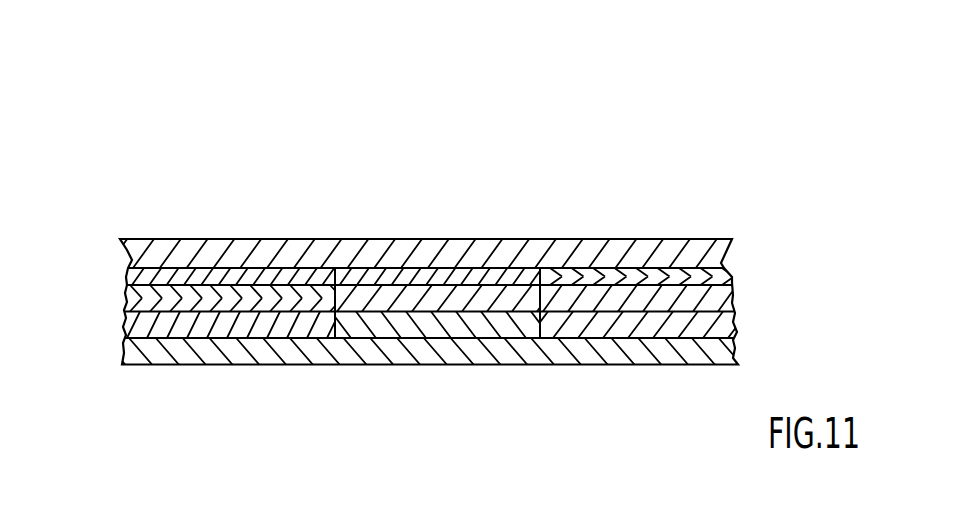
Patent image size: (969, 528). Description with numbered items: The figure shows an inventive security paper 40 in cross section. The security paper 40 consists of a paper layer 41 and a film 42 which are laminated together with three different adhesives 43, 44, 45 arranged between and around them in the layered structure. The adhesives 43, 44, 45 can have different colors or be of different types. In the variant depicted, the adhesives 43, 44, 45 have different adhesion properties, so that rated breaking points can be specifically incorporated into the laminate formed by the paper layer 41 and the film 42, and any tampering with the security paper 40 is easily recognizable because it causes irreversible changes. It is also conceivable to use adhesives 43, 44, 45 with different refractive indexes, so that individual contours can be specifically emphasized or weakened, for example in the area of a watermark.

The security paper 40 is at (718, 218).
The paper layer 41 is at (600, 347).
The film 42 is at (416, 250).
The adhesive 43 is at (472, 276).
The adhesive 44 is at (125, 292).
The adhesive 45 is at (128, 273).